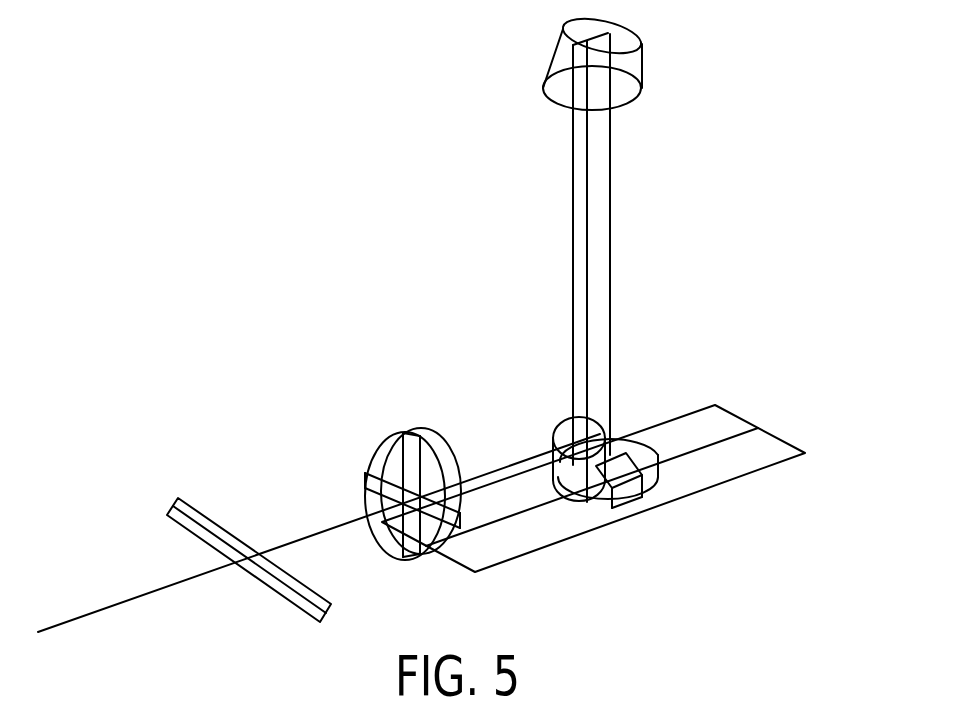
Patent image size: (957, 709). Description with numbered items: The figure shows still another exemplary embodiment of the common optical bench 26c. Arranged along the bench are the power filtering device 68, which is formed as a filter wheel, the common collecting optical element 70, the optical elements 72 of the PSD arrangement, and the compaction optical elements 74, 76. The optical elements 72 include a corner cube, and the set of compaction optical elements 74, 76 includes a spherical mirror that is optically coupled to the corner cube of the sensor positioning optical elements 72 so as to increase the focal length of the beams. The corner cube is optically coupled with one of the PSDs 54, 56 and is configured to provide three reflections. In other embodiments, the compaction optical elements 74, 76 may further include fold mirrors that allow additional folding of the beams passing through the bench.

The common optical bench 26c is at (260, 231).
The PSD 54 is at (633, 488).
The PSD 56 is at (725, 462).
The power filtering device 68 is at (380, 492).
The common collecting optical element 70 is at (175, 502).
The optical elements of the PSD arrangement 72 is at (543, 70).
The compaction optical element 74 is at (657, 428).
The compaction optical element 76 is at (632, 447).